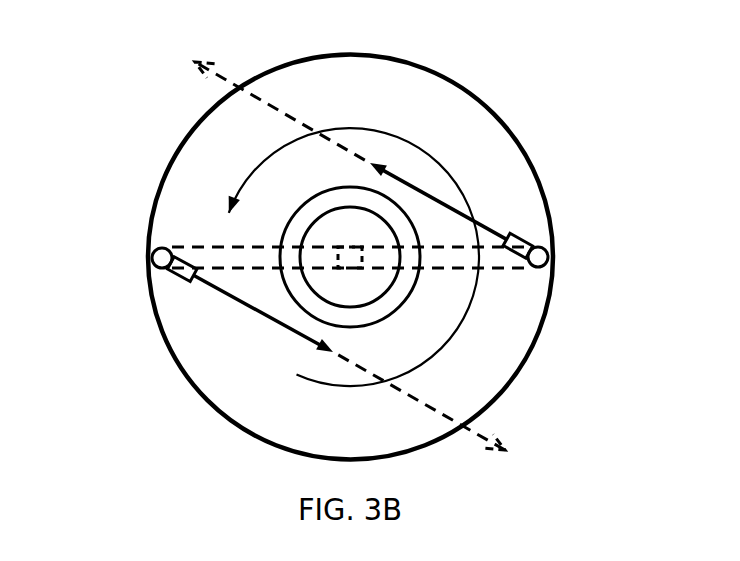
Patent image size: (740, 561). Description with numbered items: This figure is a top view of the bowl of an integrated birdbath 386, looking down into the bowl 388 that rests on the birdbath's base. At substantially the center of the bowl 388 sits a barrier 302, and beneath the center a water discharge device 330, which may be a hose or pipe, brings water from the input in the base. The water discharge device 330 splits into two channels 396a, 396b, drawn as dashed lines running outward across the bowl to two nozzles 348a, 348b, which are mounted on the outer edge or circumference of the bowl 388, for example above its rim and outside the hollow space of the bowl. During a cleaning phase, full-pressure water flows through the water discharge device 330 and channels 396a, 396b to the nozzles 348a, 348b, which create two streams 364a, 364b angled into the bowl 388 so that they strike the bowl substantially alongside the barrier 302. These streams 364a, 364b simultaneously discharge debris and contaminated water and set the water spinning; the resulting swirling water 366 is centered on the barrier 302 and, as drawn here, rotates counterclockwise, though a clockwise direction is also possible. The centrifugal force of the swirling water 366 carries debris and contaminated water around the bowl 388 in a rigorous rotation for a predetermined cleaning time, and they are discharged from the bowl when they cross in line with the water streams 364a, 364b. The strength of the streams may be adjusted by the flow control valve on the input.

The integrated birdbath 386 is at (132, 60).
The bowl 388 is at (495, 158).
The barrier 302 is at (373, 285).
The water discharge device 330 is at (350, 252).
The swirling water 366 is at (383, 130).
The stream 364a is at (403, 177).
The stream 364b is at (240, 303).
The nozzle 348a is at (540, 257).
The nozzle 348b is at (160, 258).
The channel 396a is at (492, 260).
The channel 396b is at (213, 257).